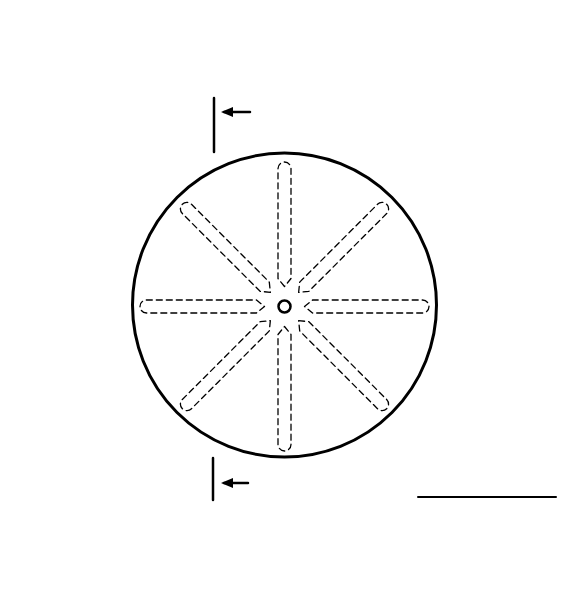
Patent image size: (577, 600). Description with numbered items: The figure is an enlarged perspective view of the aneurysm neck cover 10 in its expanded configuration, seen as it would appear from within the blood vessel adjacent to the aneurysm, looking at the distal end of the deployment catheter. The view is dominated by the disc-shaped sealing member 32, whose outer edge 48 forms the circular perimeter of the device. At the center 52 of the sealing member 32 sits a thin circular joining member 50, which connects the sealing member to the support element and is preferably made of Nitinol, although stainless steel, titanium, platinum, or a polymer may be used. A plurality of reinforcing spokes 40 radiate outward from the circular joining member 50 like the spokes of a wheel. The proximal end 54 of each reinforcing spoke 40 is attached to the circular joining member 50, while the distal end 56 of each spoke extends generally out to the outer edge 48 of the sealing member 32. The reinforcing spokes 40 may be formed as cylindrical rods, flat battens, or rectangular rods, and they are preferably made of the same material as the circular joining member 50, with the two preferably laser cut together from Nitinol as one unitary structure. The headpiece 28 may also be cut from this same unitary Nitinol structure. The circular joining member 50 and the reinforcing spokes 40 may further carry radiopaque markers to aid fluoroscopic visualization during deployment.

The aneurysm neck cover 10 is at (152, 150).
The sealing member 32 is at (336, 185).
The outer edge 48 is at (408, 213).
The headpiece 28 is at (290, 305).
The reinforcing spoke 40 is at (198, 221).
The circular joining member 50 is at (274, 303).
The center 52 is at (284, 307).
The distal end 56 is at (420, 312).
The proximal end 54 is at (347, 313).